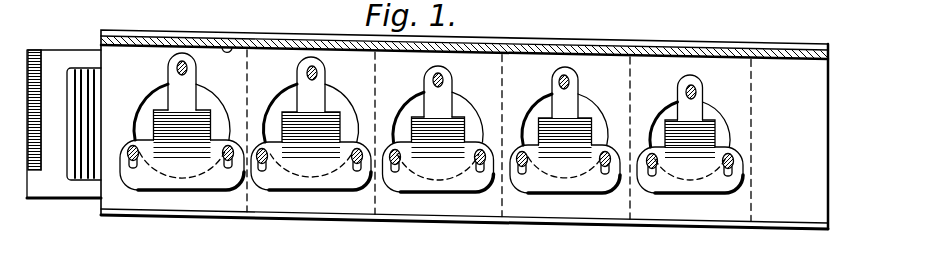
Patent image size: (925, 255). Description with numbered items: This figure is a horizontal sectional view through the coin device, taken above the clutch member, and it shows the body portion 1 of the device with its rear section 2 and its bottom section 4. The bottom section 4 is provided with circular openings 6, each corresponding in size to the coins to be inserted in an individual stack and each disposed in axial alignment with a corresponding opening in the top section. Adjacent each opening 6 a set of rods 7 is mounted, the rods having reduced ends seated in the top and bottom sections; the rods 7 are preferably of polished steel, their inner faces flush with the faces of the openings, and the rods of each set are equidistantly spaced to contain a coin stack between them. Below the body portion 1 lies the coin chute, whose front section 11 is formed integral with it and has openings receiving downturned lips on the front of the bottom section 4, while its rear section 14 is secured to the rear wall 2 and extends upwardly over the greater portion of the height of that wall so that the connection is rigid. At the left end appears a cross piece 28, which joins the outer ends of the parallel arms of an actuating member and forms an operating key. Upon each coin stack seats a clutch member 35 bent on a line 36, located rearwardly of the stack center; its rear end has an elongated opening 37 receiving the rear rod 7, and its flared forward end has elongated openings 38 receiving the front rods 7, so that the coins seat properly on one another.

The body portion 1 is at (223, 43).
The rear section 2 is at (288, 42).
The bottom section 4 is at (130, 68).
The opening 6 is at (337, 100).
The rod 7 is at (308, 72).
The front section 11 is at (307, 221).
The rear section 14 is at (191, 34).
The cross piece 28 is at (50, 77).
The clutch member 35 is at (155, 127).
The bend line 36 is at (200, 117).
The opening 37 is at (312, 63).
The opening 38 is at (228, 161).